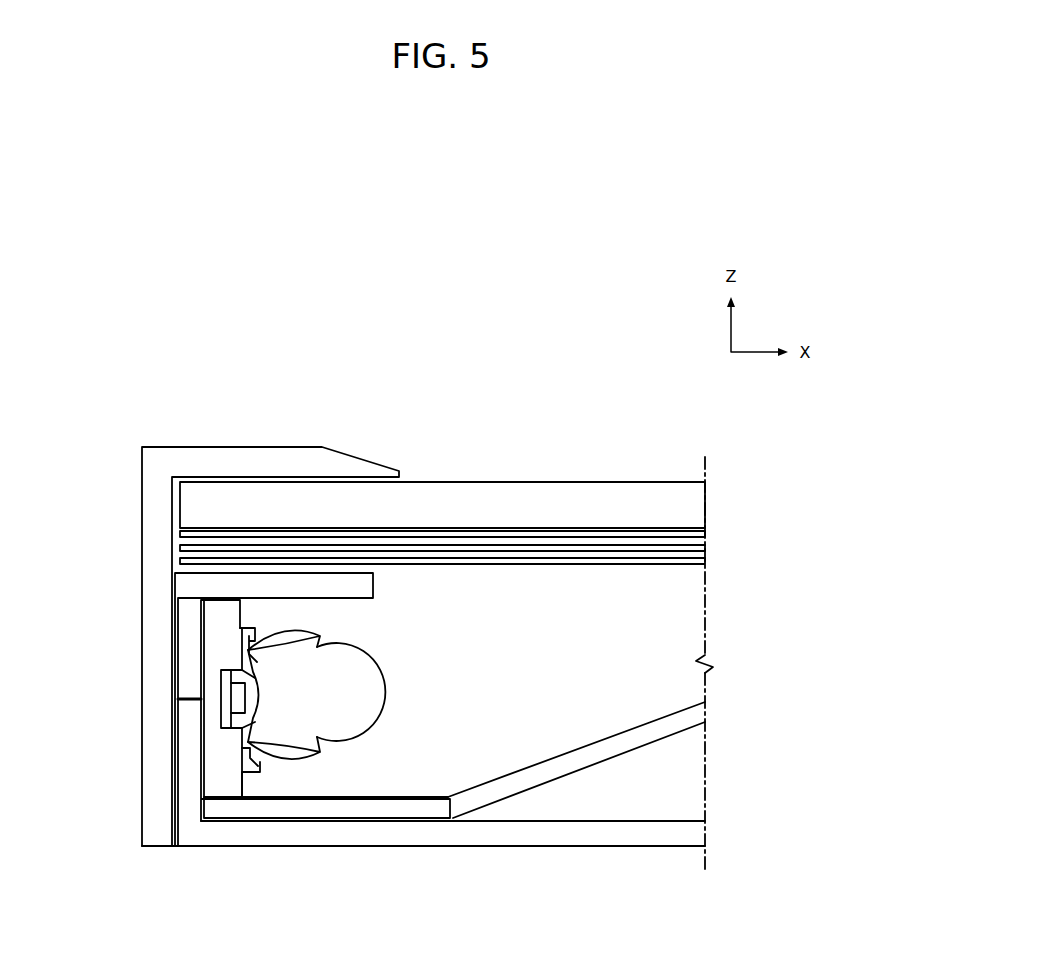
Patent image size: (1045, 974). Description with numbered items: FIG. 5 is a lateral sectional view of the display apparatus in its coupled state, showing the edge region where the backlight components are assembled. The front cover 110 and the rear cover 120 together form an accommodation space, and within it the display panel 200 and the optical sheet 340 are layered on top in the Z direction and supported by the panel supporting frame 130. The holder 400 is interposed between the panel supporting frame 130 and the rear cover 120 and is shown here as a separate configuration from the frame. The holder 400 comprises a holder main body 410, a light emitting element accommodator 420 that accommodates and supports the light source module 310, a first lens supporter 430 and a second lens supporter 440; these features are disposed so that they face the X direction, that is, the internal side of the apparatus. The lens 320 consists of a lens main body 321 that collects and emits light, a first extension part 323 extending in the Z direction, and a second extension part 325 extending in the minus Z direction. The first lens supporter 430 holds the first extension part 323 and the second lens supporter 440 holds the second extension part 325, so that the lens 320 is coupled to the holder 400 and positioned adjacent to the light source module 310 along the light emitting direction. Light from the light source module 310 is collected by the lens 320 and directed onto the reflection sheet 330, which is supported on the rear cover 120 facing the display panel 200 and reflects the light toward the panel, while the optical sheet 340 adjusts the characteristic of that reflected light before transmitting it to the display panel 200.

The front cover 110 is at (235, 447).
The display panel 200 is at (352, 497).
The optical sheet 340 is at (180, 560).
The panel supporting frame 130 is at (183, 597).
The holder 400 is at (215, 800).
The first lens supporter 430 is at (245, 633).
The second lens supporter 440 is at (259, 770).
The holder main body 410 is at (211, 685).
The light emitting element accommodator 420 is at (232, 720).
The light source module 310 is at (255, 700).
The lens 320 is at (338, 680).
The lens main body 321 is at (330, 678).
The first extension part 323 is at (330, 643).
The second extension part 325 is at (330, 749).
The reflection sheet 330 is at (623, 748).
The rear cover 120 is at (456, 838).